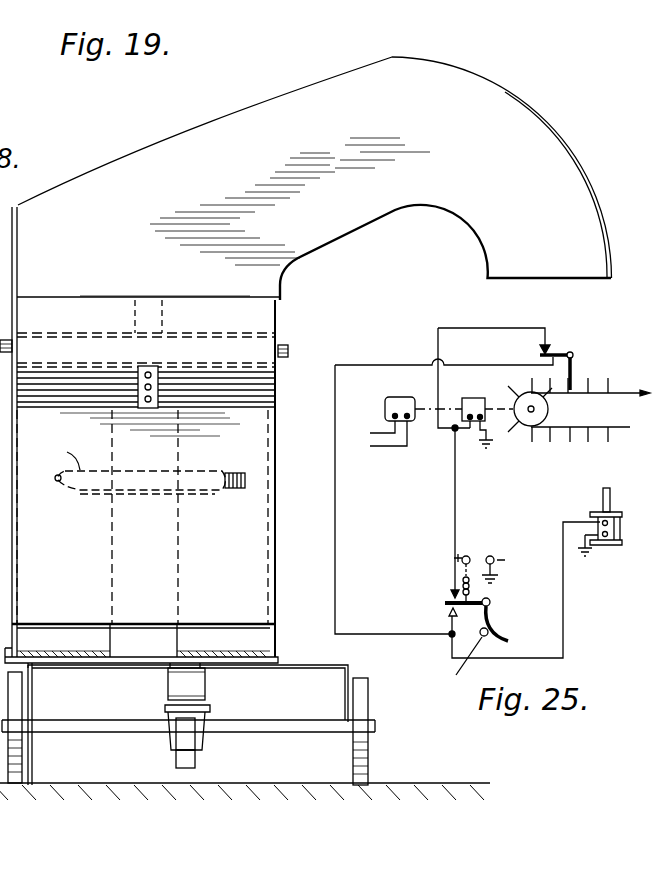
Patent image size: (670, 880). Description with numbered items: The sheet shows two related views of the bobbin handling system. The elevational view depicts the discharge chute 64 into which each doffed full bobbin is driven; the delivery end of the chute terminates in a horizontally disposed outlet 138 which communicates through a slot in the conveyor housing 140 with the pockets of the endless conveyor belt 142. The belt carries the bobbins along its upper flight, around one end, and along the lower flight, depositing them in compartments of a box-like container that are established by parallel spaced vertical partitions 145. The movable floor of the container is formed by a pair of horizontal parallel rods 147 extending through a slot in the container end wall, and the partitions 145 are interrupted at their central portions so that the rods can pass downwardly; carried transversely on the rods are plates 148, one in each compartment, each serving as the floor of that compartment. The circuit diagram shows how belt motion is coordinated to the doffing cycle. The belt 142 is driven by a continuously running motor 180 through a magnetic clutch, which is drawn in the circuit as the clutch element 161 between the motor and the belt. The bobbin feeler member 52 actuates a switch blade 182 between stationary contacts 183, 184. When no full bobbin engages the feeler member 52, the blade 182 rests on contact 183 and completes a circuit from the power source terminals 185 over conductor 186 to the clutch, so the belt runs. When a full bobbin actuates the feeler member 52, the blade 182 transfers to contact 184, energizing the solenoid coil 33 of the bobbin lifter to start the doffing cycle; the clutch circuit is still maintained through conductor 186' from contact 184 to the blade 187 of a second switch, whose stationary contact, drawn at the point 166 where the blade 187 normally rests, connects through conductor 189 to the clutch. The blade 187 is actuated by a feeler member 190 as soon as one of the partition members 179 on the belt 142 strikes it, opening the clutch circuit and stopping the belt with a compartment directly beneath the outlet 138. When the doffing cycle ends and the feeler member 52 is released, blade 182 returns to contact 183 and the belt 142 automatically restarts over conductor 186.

In FIG. 19, the chute 64 is at (493, 80).
In FIG. 19, the outlet 138 is at (280, 290).
In FIG. 19, the conveyor housing 140 is at (278, 328).
In FIG. 19, the plates 148 is at (85, 492).
In FIG. 19, the rods 147 is at (172, 495).
In FIG. 19, the partitions 145 is at (250, 642).
In FIG. 25, the conductor 189 is at (456, 316).
In FIG. 25, the contact point 166 is at (542, 350).
In FIG. 25, the switch blade 187 is at (561, 356).
In FIG. 25, the feeler member 190 is at (576, 371).
In FIG. 25, the conductor 186' is at (444, 497).
In FIG. 25, the conductor 186 is at (492, 541).
In FIG. 25, the motor 180 is at (406, 394).
In FIG. 25, the switch 161 is at (480, 394).
In FIG. 25, the partition members 179 is at (572, 439).
In FIG. 25, the conveyor belt 142 is at (628, 385).
In FIG. 25, the solenoid coil 33 is at (619, 522).
In FIG. 25, the power source terminals 185 is at (480, 568).
In FIG. 25, the stationary contact 183 is at (447, 600).
In FIG. 25, the switch blade 182 is at (479, 602).
In FIG. 25, the stationary contact 184 is at (447, 610).
In FIG. 25, the bobbin feeler member 52 is at (489, 614).